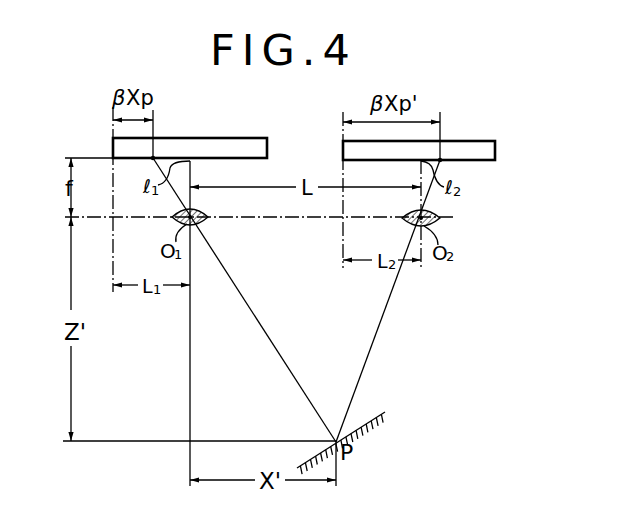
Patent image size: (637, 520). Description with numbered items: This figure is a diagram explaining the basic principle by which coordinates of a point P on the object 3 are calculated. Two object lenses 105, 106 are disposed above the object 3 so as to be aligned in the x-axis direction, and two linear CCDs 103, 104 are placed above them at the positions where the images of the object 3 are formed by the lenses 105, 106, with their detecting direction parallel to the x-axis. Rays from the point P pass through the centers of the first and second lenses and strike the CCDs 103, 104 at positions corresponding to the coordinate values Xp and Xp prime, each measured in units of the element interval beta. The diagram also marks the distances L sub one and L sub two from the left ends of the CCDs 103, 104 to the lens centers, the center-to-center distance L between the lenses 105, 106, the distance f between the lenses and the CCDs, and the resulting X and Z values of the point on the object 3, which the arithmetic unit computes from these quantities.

The linear CCD 103 is at (113, 148).
The linear CCD 104 is at (495, 148).
The object lens 105 is at (173, 219).
The object lens 106 is at (438, 221).
The object 3 is at (376, 411).